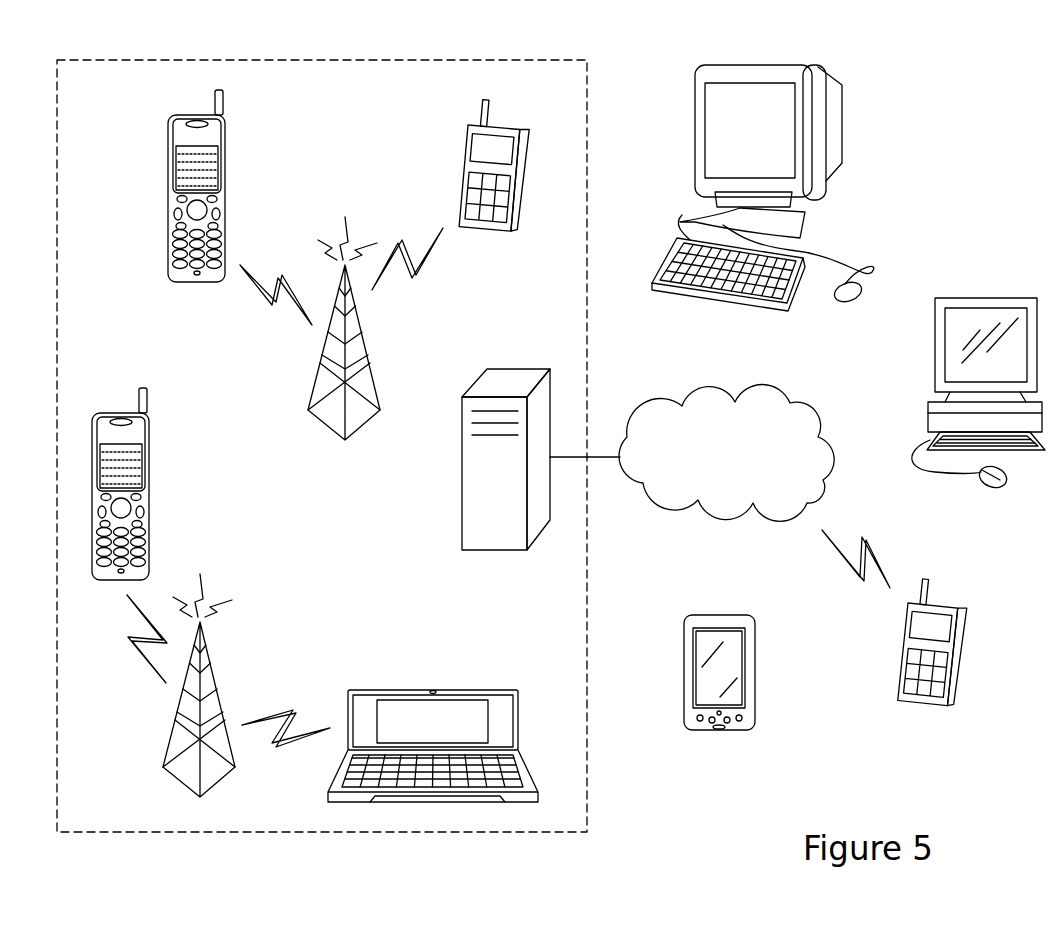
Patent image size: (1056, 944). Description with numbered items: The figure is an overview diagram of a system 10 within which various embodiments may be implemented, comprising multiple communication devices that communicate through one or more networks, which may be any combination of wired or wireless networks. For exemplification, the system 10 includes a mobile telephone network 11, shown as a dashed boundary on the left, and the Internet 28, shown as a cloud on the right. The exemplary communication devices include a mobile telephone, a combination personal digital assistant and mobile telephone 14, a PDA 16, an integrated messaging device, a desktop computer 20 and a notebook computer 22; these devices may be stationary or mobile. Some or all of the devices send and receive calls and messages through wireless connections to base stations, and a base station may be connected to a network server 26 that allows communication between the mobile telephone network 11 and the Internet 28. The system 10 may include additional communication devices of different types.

The system 10 is at (1027, 560).
The mobile telephone network 11 is at (95, 104).
The combination personal digital assistant (PDA) and mobile telephone 14 is at (436, 690).
The PDA 16 is at (755, 667).
The desktop computer 20 is at (842, 122).
The notebook computer 22 is at (988, 296).
The network server 26 is at (462, 473).
The Internet 28 is at (765, 384).